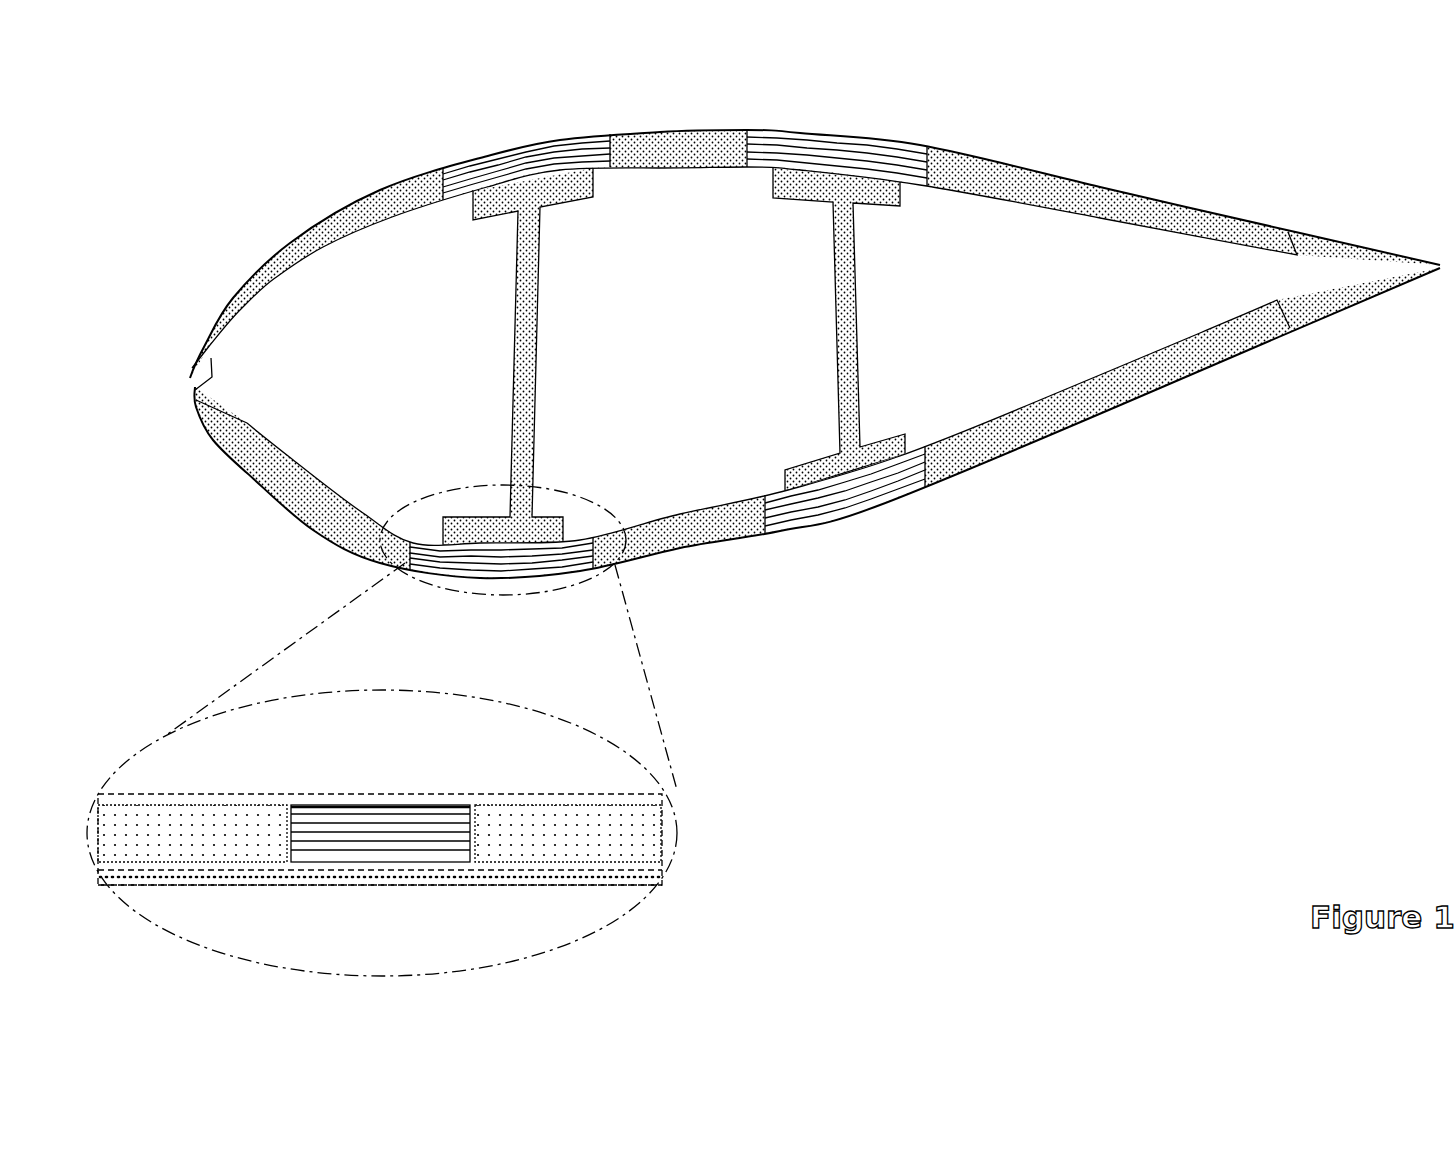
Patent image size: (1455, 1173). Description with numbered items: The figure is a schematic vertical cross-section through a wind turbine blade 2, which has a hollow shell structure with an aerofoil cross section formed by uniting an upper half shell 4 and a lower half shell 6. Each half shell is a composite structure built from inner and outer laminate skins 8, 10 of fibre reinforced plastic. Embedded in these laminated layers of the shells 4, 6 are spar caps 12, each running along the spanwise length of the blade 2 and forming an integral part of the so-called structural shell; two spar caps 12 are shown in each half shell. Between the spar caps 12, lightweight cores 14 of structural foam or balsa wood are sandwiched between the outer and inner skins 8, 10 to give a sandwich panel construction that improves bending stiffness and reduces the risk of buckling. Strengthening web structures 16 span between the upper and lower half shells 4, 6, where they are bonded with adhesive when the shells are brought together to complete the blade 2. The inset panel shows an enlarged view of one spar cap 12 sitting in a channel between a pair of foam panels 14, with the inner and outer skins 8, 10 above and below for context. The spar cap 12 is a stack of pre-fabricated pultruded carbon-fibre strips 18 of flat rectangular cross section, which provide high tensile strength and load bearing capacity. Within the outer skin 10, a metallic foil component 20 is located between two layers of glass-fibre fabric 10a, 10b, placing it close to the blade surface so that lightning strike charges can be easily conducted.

The wind turbine blade 2 is at (233, 140).
The upper half shell 4 is at (1392, 198).
The lower half shell 6 is at (1305, 365).
The inner skin 8 is at (365, 228).
The outer skin 10 is at (1295, 218).
The layer of glass-fibre fabric 10a is at (285, 886).
The layer of glass-fibre fabric 10b is at (508, 871).
The spar cap 12 is at (525, 152).
The core 14 is at (672, 134).
The web structure 16 is at (537, 352).
The strip 18 is at (418, 822).
The metallic foil component 20 is at (393, 878).